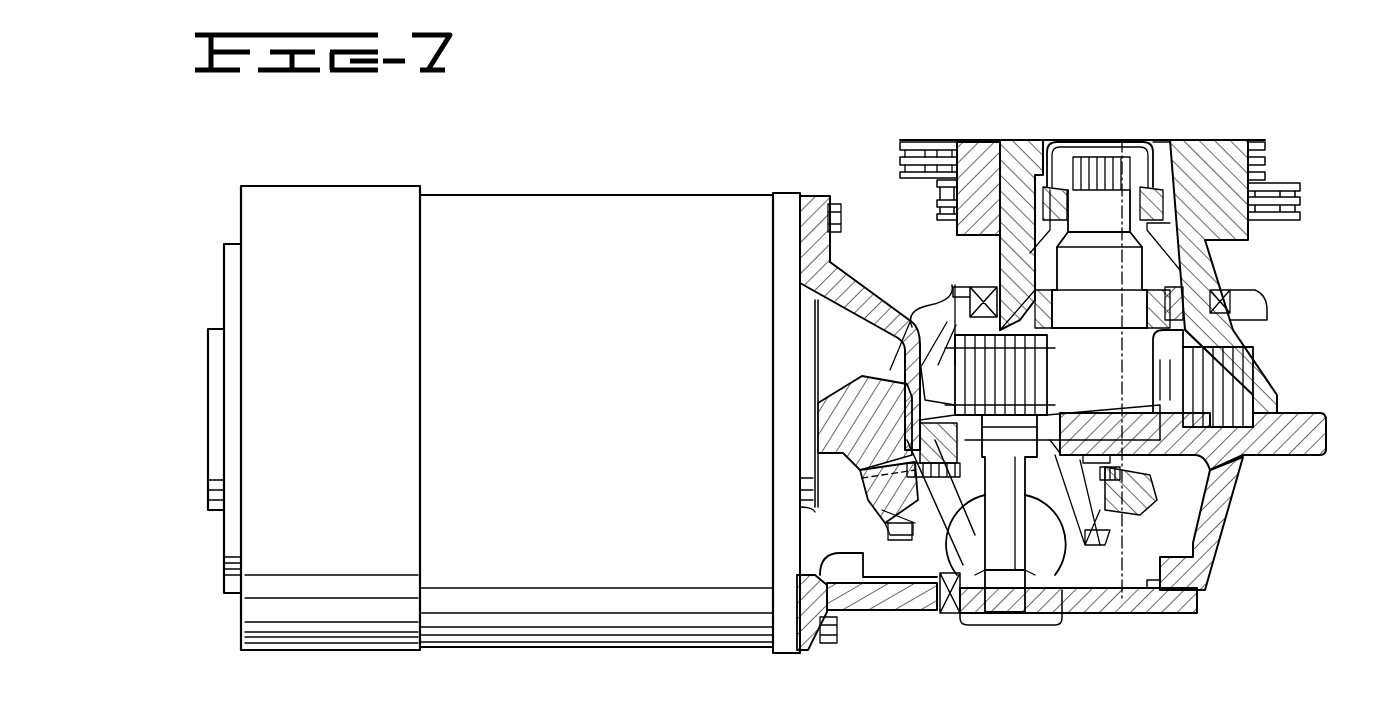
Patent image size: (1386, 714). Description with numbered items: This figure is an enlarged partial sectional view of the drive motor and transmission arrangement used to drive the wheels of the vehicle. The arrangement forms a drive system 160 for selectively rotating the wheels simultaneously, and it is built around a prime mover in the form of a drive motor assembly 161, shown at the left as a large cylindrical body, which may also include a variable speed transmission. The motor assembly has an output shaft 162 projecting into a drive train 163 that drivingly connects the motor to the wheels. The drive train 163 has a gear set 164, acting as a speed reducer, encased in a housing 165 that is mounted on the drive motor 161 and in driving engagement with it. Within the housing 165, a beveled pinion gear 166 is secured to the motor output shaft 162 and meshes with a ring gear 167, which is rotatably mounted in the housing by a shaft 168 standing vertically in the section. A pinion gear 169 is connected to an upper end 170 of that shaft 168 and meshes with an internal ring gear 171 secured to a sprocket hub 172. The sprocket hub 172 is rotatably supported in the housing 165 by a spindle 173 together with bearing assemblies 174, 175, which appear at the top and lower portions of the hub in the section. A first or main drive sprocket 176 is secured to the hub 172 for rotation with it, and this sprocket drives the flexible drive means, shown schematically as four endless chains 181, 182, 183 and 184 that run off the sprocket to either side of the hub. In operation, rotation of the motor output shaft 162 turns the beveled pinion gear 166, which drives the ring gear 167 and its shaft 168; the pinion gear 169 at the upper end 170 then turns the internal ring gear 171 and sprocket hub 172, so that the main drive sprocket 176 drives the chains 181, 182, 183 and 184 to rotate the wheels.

The drive system 160 is at (760, 148).
The drive motor assembly 161 is at (605, 433).
The output shaft 162 is at (838, 400).
The drive train 163 is at (1000, 140).
The gear set 164 is at (1158, 487).
The housing 165 is at (1320, 427).
The beveled pinion gear 166 is at (912, 325).
The ring gear 167 is at (900, 500).
The shaft 168 is at (1018, 600).
The pinion gear 169 is at (1053, 357).
The upper end 170 is at (1047, 408).
The internal ring gear 171 is at (1223, 347).
The sprocket hub 172 is at (1025, 150).
The spindle 173 is at (1063, 265).
The bearing assembly 174 is at (1178, 205).
The bearing assembly 175 is at (1188, 295).
The main drive sprocket 176 is at (972, 143).
The endless chain 181 is at (900, 157).
The endless chain 182 is at (905, 138).
The endless chain 183 is at (1285, 210).
The endless chain 184 is at (1290, 182).